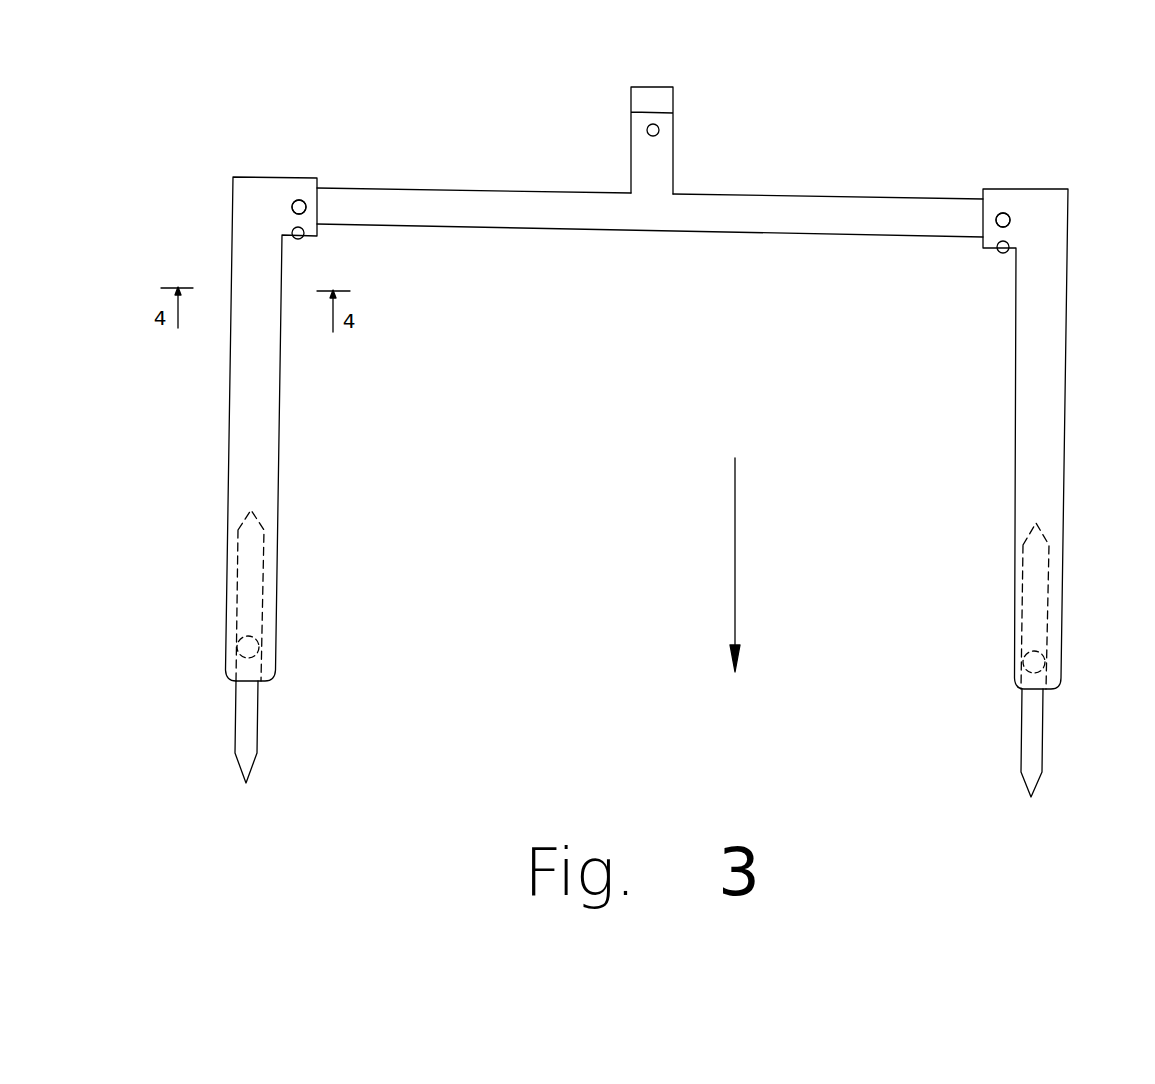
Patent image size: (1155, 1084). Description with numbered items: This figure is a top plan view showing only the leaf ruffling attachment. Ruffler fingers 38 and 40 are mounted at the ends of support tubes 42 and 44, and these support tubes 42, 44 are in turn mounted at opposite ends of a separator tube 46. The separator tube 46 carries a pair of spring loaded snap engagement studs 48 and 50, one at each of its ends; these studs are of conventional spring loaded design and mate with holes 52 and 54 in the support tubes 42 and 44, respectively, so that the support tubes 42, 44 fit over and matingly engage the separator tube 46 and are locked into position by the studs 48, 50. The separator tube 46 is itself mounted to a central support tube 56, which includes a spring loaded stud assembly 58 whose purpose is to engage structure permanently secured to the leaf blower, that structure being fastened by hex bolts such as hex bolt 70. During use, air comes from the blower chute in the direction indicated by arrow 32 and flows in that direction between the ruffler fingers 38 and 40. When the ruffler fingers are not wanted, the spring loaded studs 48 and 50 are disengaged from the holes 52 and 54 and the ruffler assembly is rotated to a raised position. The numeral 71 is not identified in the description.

The arrow 32 is at (735, 535).
The ruffler finger 38 is at (250, 547).
The ruffler finger 40 is at (1033, 611).
The support tube 42 is at (279, 408).
The support tube 44 is at (1014, 408).
The separator tube 46 is at (638, 231).
The spring loaded snap engagement stud 48 is at (297, 200).
The spring loaded snap engagement stud 50 is at (1003, 212).
The hole 52 is at (292, 212).
The hole 54 is at (1010, 224).
The central support tube 56 is at (673, 168).
The spring loaded stud assembly 58 is at (658, 126).
The hex bolt 70 is at (1003, 253).
The notch 71 is at (302, 243).